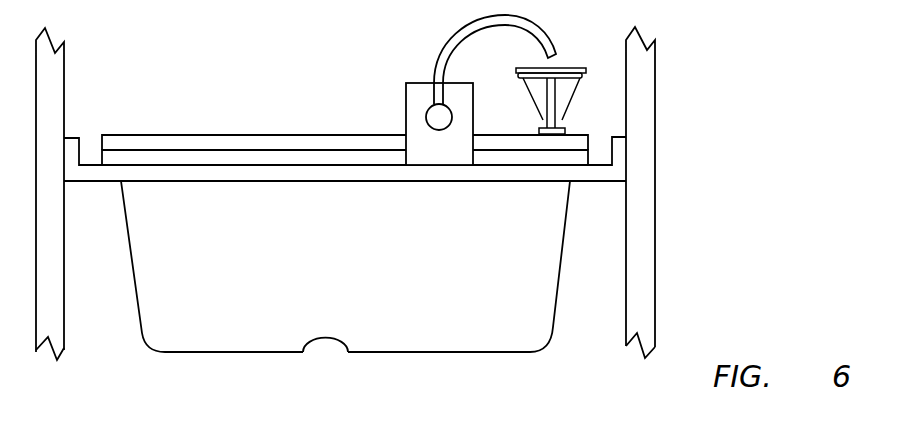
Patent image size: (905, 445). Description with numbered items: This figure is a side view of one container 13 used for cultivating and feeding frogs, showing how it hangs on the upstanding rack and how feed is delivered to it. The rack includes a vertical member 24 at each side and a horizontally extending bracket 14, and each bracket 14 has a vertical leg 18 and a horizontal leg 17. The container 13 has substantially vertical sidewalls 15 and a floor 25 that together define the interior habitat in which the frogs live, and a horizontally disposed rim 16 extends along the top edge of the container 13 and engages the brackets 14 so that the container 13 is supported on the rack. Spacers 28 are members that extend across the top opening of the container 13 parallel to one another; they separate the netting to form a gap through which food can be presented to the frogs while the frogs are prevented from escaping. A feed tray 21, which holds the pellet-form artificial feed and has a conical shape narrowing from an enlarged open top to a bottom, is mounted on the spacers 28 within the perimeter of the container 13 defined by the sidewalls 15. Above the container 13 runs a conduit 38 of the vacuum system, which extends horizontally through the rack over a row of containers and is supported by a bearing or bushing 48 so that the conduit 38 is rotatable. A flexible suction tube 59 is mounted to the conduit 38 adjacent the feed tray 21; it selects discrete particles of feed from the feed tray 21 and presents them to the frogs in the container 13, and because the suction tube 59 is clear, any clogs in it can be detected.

The container 13 is at (437, 353).
The bracket 14 is at (600, 182).
The sidewall 15 is at (361, 269).
The rim 16 is at (249, 156).
The horizontal leg 17 is at (104, 172).
The vertical leg 18 is at (75, 148).
The feed tray 21 is at (533, 70).
The vertical member 24 is at (655, 77).
The floor 25 is at (303, 352).
The spacer 28 is at (159, 133).
The conduit 38 is at (428, 110).
The bearing or bushing 48 is at (422, 82).
The flexible suction tube 59 is at (527, 22).